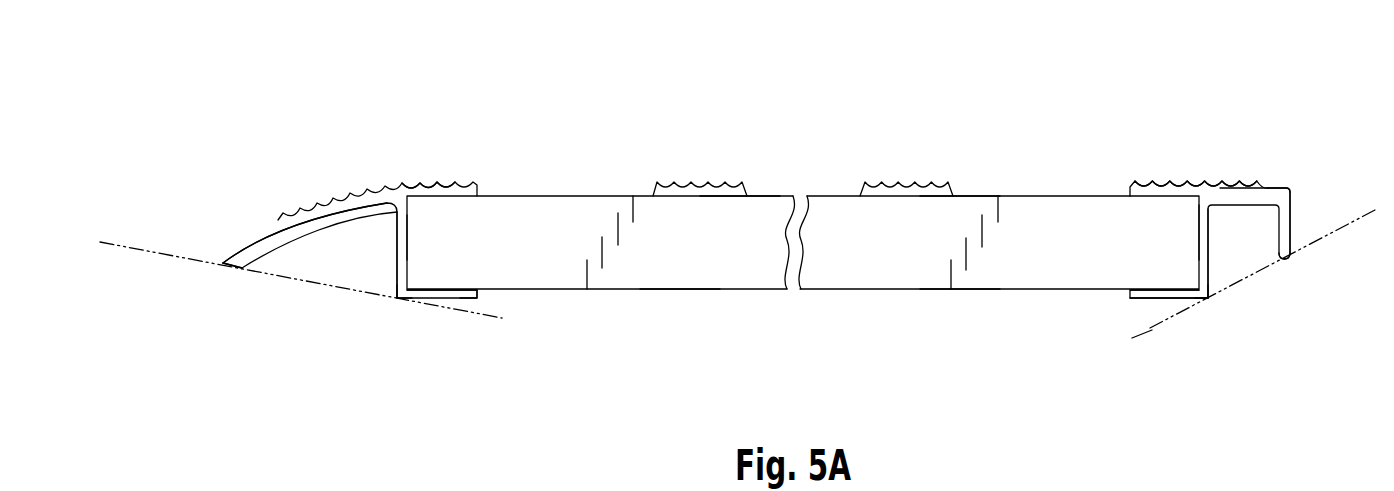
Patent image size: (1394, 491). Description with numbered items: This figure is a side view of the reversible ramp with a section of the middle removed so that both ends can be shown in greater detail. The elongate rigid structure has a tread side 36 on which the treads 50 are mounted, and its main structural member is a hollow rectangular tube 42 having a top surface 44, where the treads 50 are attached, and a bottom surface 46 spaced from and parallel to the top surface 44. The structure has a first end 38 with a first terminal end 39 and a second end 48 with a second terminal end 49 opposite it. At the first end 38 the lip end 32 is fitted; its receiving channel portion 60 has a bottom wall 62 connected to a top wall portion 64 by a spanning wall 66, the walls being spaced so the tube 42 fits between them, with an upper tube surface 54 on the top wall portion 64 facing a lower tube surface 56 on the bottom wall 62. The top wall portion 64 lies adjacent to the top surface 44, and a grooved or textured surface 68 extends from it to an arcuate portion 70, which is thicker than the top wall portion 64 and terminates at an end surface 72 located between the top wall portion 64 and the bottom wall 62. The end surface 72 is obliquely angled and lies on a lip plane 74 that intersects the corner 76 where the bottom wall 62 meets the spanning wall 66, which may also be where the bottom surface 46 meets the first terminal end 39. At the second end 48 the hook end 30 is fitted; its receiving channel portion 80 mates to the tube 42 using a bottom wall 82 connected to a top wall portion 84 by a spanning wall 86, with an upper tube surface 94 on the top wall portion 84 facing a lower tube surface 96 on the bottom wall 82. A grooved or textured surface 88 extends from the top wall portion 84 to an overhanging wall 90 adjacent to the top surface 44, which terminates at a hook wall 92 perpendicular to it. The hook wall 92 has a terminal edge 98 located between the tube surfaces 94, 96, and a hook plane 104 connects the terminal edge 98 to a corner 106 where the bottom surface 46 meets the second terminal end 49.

The hook end 30 is at (1213, 160).
The lip end 32 is at (383, 153).
The tread side 36 is at (880, 150).
The first end 38 is at (468, 238).
The first terminal end 39 is at (407, 237).
The hollow rectangular tube 42 is at (850, 272).
The top surface 44 is at (775, 196).
The bottom surface 46 is at (690, 289).
The second end 48 is at (1135, 247).
The second terminal end 49 is at (1198, 228).
The treads 50 is at (690, 183).
The upper tube surface 54 is at (465, 197).
The lower tube surface 56 is at (457, 288).
The receiving channel portion 60 is at (376, 250).
The bottom wall 62 is at (470, 298).
The top wall portion 64 is at (430, 195).
The spanning wall 66 is at (397, 270).
The grooved or textured surface 68 is at (312, 203).
The arcuate portion 70 is at (243, 252).
The end surface 72 is at (227, 270).
The lip plane 74 is at (170, 252).
The corner 76 is at (396, 298).
The receiving channel portion 80 is at (1217, 248).
The bottom wall 82 is at (1143, 298).
The top wall portion 84 is at (1145, 197).
The spanning wall 86 is at (1210, 268).
The grooved or textured surface 88 is at (1238, 187).
The overhanging wall 90 is at (1274, 195).
The hook wall 92 is at (1292, 215).
The upper tube surface 94 is at (1145, 197).
The lower tube surface 96 is at (1157, 288).
The terminal edge 98 is at (1288, 258).
The hook plane 104 is at (1152, 332).
The corner 106 is at (1208, 298).